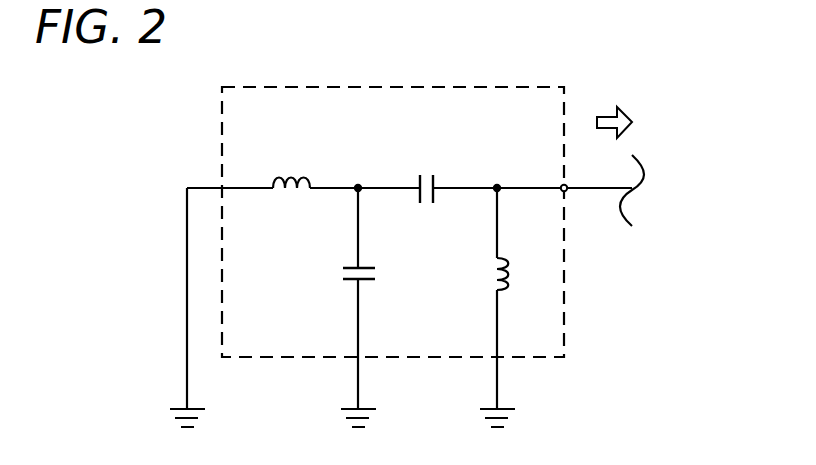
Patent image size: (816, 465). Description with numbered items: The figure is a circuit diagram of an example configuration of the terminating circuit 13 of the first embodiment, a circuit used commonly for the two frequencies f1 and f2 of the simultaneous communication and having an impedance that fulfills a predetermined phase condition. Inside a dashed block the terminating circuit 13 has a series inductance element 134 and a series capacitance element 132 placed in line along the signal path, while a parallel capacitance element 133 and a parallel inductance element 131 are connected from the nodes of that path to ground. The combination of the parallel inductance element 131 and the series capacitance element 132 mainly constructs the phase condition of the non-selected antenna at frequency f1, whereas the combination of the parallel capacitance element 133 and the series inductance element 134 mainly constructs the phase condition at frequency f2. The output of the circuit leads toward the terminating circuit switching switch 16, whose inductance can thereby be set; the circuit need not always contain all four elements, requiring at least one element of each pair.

The terminating circuit 13 is at (222, 96).
The terminating circuit switching switch 16 is at (636, 122).
The parallel inductance element 131 is at (493, 270).
The series capacitance element 132 is at (428, 173).
The parallel capacitance element 133 is at (343, 272).
The series inductance element 134 is at (293, 173).